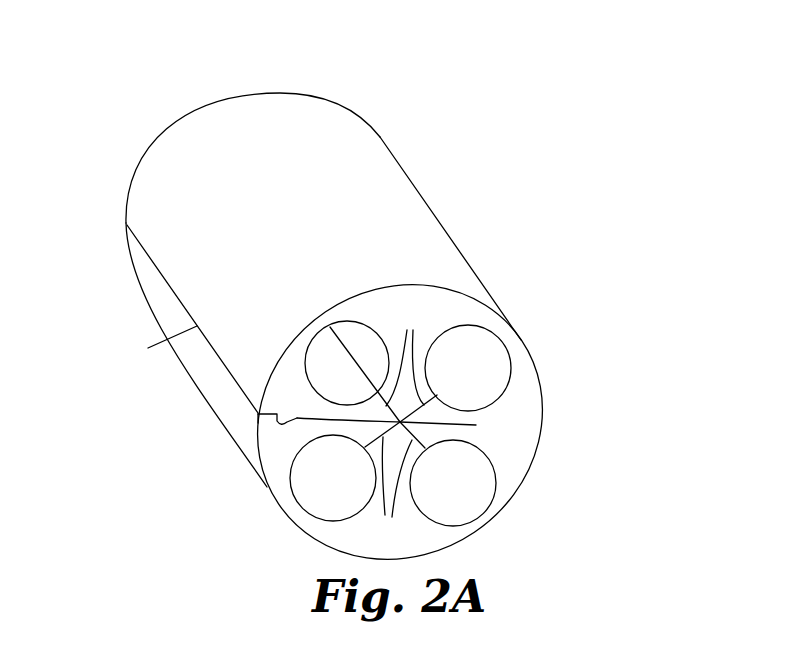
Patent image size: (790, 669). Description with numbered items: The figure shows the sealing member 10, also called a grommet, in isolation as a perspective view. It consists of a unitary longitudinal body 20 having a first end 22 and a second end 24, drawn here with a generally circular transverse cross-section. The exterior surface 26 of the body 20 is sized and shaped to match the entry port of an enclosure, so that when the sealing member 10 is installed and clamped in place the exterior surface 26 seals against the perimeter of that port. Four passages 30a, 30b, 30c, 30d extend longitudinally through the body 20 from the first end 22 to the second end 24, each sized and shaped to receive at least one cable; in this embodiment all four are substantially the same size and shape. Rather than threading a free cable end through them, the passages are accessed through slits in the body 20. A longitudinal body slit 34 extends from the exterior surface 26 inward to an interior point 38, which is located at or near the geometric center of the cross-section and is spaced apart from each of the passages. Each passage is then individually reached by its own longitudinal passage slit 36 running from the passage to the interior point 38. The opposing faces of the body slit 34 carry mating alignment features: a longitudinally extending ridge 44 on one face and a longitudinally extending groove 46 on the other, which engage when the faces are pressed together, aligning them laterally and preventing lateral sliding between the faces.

The sealing member 10 is at (482, 192).
The longitudinal body 20 is at (350, 110).
The first end 22 is at (518, 471).
The second end 24 is at (160, 147).
The exterior surface 26 is at (155, 219).
The passage 30a is at (307, 502).
The passage 30b is at (478, 510).
The passage 30c is at (489, 348).
The passage 30d is at (350, 327).
The longitudinal body slit 34 is at (157, 345).
The longitudinal passage slit 36 is at (399, 423).
The interior point 38 is at (402, 427).
The longitudinally extending ridge 44 is at (280, 421).
The longitudinally extending groove 46 is at (286, 423).